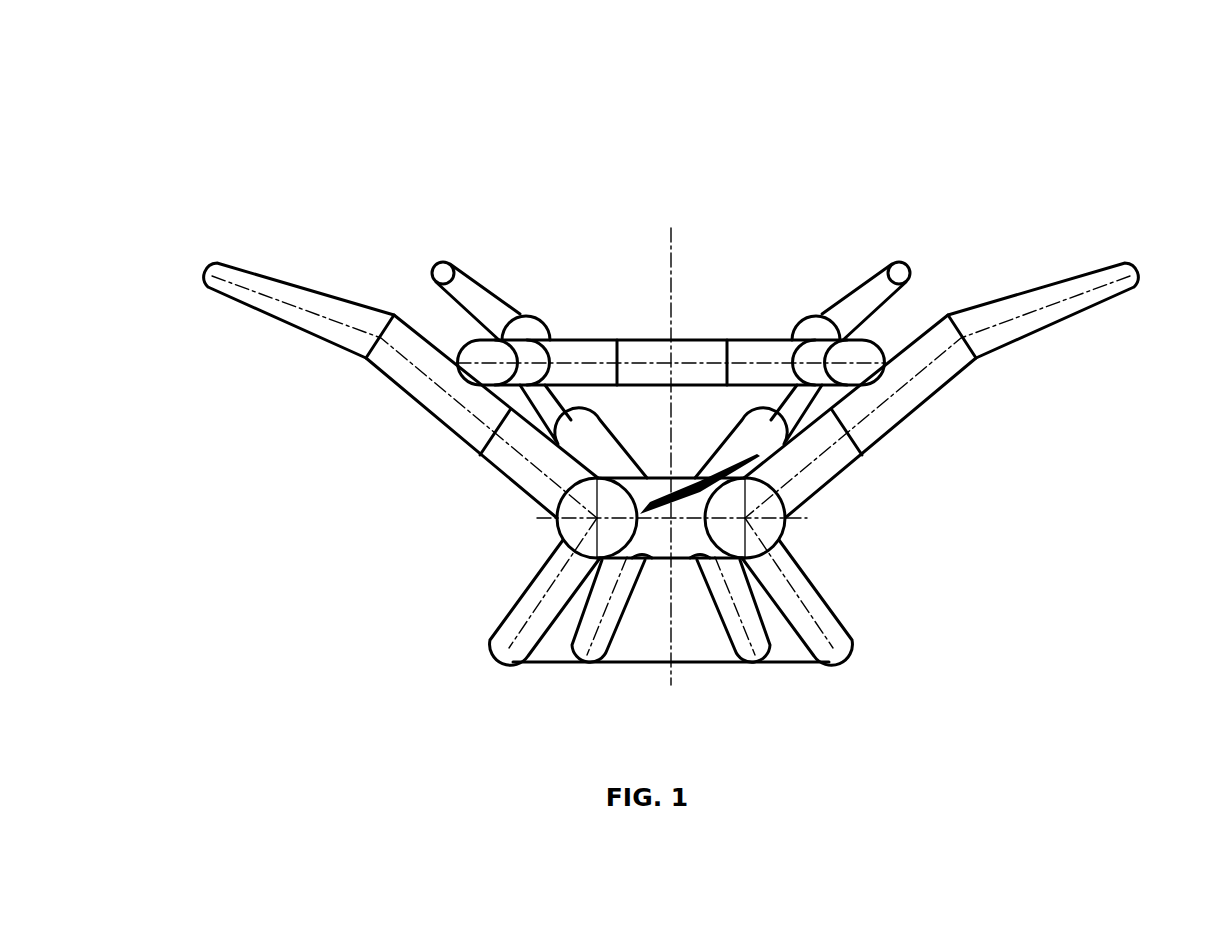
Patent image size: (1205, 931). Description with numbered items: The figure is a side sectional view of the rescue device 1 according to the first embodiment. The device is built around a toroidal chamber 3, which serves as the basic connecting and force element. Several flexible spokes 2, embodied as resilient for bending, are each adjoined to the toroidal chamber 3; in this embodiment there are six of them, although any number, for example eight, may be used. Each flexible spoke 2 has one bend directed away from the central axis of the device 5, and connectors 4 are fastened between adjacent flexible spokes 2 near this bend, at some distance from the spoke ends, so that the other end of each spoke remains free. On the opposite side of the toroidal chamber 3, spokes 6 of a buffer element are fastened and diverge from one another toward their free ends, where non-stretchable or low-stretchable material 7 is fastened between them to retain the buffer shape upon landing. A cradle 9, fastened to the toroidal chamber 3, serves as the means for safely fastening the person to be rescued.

The rescue device 1 is at (922, 205).
The flexible spokes 2 is at (527, 480).
The toroidal chamber 3 is at (763, 528).
The connectors 4 is at (850, 357).
The central axis of the device 5 is at (673, 242).
The spokes of the buffer element 6 is at (597, 603).
The non-stretchable or low-stretchable material 7 is at (703, 662).
The cradle 9 is at (715, 490).